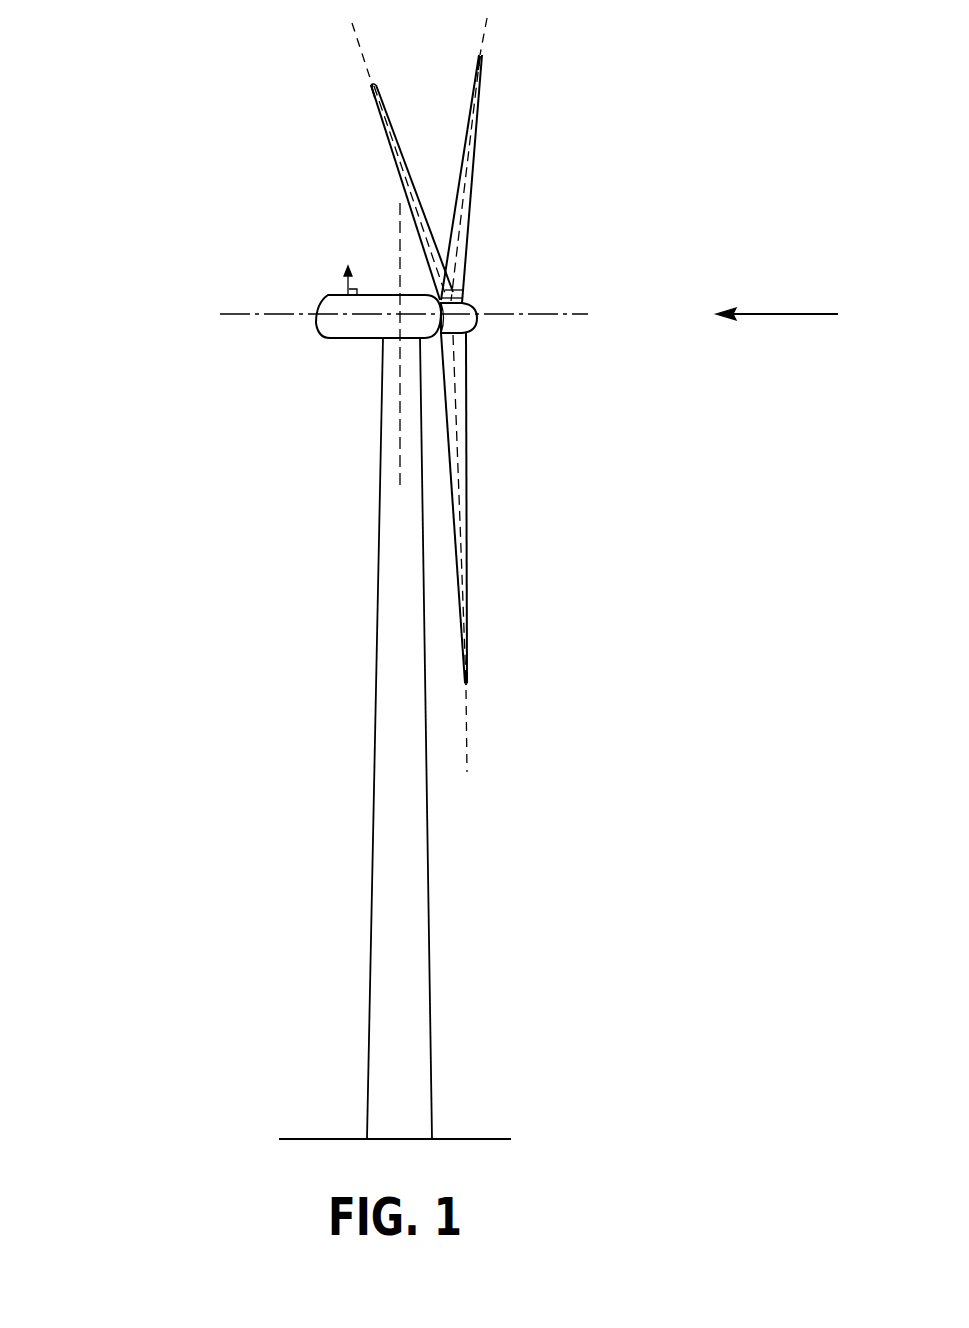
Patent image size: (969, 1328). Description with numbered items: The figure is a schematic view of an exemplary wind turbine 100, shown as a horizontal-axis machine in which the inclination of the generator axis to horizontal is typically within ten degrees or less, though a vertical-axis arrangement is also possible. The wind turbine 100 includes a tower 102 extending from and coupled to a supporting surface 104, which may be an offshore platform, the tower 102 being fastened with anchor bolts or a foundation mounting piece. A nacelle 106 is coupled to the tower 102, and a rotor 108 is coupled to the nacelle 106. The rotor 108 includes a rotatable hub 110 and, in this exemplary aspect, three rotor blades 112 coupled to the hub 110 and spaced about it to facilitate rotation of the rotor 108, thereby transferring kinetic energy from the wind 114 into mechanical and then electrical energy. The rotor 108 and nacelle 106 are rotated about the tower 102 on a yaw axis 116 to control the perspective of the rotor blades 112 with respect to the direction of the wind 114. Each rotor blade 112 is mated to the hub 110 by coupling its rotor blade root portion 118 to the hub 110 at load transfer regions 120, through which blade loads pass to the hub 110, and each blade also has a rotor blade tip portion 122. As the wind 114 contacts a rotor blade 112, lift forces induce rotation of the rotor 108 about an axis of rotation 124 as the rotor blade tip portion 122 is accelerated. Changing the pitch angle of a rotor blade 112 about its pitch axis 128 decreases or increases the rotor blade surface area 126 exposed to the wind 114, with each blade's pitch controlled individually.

The wind turbine 100 is at (158, 74).
The tower 102 is at (371, 904).
The supporting surface 104 is at (321, 1138).
The nacelle 106 is at (346, 340).
The rotor 108 is at (494, 186).
The rotatable hub 110 is at (480, 305).
The rotor blades 112 is at (397, 190).
The wind 114 is at (788, 311).
The yaw axis 116 is at (399, 262).
The rotor blade root portion 118 is at (466, 420).
The load transfer regions 120 is at (466, 256).
The rotor blade tip portion 122 is at (372, 110).
The axis of rotation 124 is at (552, 318).
The rotor blade surface area 126 is at (480, 258).
The pitch axis 128 is at (354, 33).